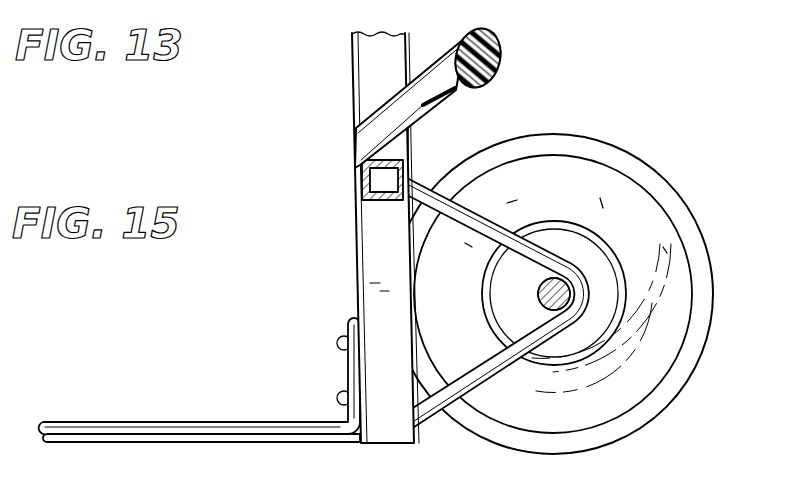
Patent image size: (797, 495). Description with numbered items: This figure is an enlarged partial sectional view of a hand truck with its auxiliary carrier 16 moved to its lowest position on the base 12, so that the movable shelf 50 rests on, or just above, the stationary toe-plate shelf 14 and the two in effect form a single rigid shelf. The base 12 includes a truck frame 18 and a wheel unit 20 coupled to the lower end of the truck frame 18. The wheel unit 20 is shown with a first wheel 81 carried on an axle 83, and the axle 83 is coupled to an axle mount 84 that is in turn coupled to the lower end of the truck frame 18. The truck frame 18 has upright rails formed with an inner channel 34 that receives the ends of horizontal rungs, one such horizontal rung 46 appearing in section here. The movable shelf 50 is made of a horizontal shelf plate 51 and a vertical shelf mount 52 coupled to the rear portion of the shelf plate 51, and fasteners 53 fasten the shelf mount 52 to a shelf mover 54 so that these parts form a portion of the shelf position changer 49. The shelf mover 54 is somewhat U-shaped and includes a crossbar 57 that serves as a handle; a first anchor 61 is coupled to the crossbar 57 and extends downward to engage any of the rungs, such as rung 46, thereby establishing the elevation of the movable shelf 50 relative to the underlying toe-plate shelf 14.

The base 12 is at (459, 157).
The toe-plate shelf 14 is at (205, 449).
The auxiliary carrier 16 is at (435, 43).
The truck frame 18 is at (348, 68).
The wheel unit 20 is at (584, 191).
The inner channel 34 is at (387, 234).
The horizontal rung 46 is at (358, 184).
The shelf position changer 49 is at (417, 66).
The movable shelf 50 is at (318, 416).
The horizontal shelf plate 51 is at (152, 422).
The vertical shelf mount 52 is at (345, 372).
The fasteners 53 is at (342, 342).
The shelf mover 54 is at (353, 131).
The crossbar 57 is at (500, 53).
The first anchor 61 is at (410, 105).
The first wheel 81 is at (665, 165).
The axle 83 is at (538, 300).
The axle mount 84 is at (497, 385).